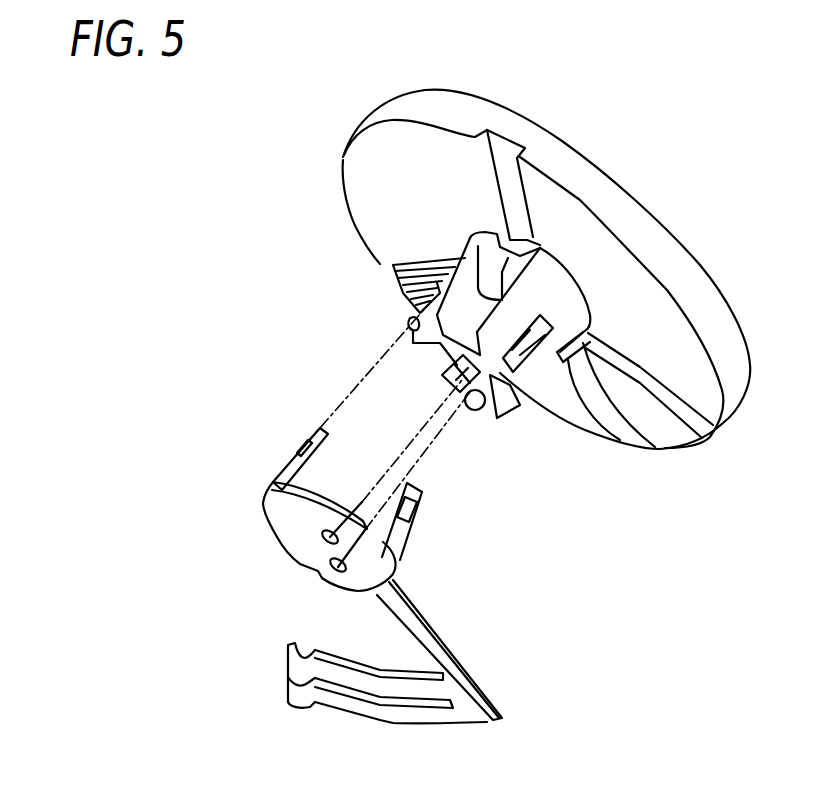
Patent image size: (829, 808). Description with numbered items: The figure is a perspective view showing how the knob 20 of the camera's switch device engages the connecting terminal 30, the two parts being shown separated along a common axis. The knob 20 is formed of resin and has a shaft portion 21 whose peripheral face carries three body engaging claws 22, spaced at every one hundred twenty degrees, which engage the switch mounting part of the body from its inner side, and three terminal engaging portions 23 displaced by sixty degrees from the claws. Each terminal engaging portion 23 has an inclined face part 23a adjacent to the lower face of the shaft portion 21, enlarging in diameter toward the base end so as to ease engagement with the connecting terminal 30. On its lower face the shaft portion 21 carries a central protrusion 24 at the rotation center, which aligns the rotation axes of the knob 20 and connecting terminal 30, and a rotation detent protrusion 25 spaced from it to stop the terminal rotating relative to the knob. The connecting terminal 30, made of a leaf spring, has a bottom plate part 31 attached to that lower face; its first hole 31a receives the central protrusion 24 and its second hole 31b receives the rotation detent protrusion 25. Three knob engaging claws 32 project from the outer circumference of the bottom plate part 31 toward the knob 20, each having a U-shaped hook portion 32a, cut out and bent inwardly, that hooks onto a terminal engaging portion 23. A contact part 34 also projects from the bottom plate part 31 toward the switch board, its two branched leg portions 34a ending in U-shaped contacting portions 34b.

The knob 20 is at (384, 184).
The shaft portion 21 is at (437, 300).
The body engaging claw 22 is at (462, 258).
The terminal engaging portion 23 is at (581, 431).
The inclined face part 23a is at (531, 385).
The central protrusion 24 is at (466, 394).
The rotation detent protrusion 25 is at (481, 410).
The connecting terminal 30 is at (347, 507).
The bottom plate part 31 is at (287, 559).
The first hole 31a is at (320, 548).
The second hole 31b is at (332, 576).
The knob engaging claw 32 is at (381, 485).
The hook portion 32a is at (319, 440).
The contact part 34 is at (378, 684).
The leg portion 34a is at (373, 680).
The contacting portion 34b is at (298, 673).